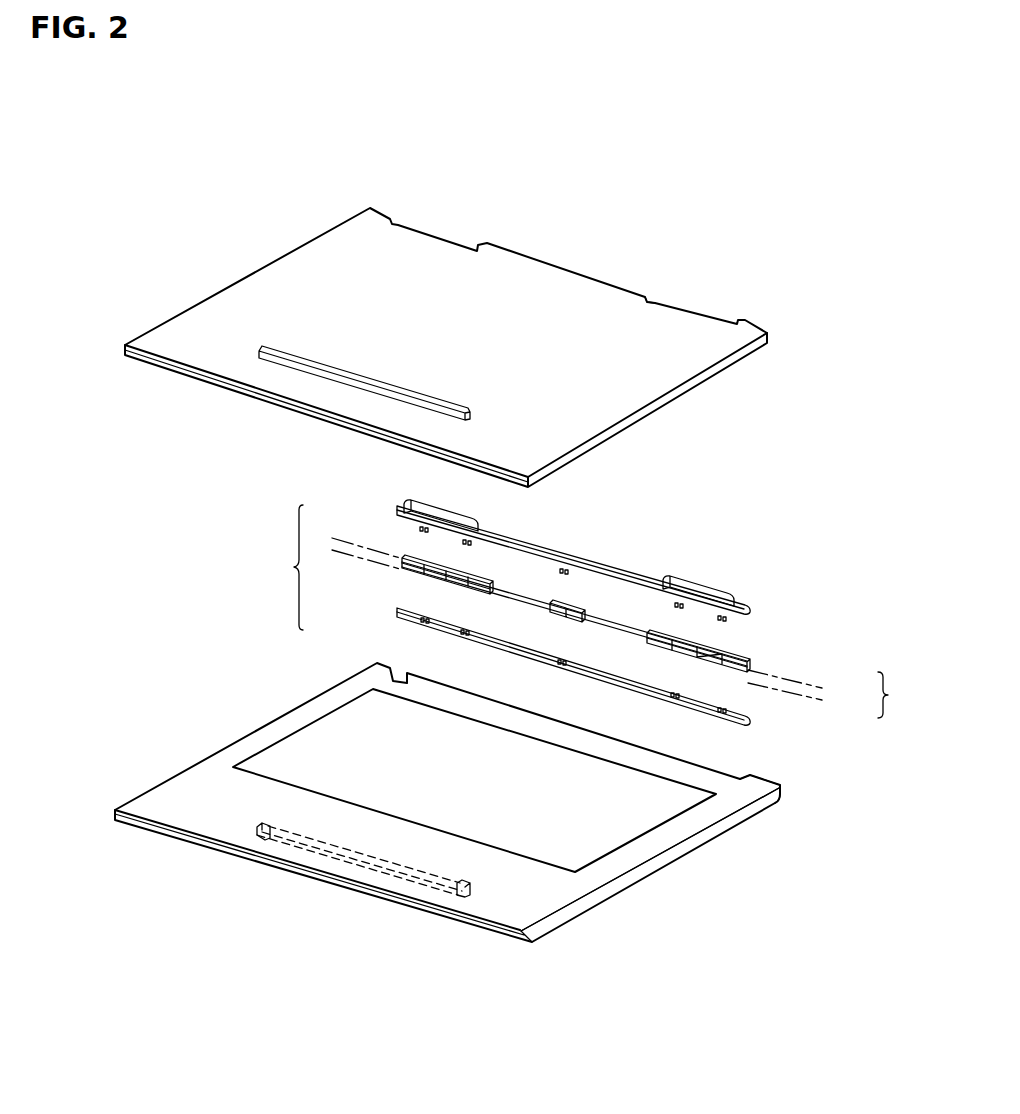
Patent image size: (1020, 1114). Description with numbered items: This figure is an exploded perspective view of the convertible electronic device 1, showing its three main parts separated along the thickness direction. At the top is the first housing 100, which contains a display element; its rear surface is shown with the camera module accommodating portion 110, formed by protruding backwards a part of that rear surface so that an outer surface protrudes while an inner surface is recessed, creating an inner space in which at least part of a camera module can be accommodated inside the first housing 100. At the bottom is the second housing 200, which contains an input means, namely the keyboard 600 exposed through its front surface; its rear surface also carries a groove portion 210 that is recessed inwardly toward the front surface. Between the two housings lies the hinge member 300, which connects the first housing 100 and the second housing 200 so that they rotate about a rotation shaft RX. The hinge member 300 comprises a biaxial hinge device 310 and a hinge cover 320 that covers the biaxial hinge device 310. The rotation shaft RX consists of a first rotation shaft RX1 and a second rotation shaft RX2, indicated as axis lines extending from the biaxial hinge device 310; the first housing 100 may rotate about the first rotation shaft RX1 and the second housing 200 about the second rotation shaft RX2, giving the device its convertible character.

The convertible electronic device 1 is at (152, 137).
The first housing 100 is at (446, 343).
The camera module accommodating portion 110 is at (281, 352).
The second housing 200 is at (459, 809).
The groove portion 210 is at (323, 850).
The hinge member 300 is at (501, 609).
The biaxial hinge device 310 is at (403, 563).
The hinge cover 320 is at (397, 510).
The keyboard 600 is at (637, 822).
The rotation shaft RX is at (836, 696).
The first rotation shaft RX1 is at (813, 681).
The second rotation shaft RX2 is at (813, 704).